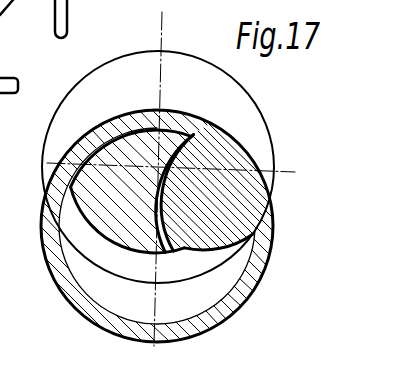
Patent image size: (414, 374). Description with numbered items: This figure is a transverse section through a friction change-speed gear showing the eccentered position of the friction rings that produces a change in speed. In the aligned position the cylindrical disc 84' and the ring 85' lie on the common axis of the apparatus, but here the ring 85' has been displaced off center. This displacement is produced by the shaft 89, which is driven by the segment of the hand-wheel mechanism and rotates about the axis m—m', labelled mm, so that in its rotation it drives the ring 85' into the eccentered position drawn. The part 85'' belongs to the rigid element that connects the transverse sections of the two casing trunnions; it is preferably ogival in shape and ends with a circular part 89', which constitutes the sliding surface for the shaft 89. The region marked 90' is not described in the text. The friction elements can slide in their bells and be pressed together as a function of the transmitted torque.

The cylindrical disc 84' is at (177, 167).
The ring 85' is at (145, 226).
The part of the rigid element 85'' is at (150, 218).
The shaft 89 is at (244, 187).
The circular part 89' is at (104, 203).
The gap 90' is at (157, 168).
The axis m—m' mm is at (212, 192).